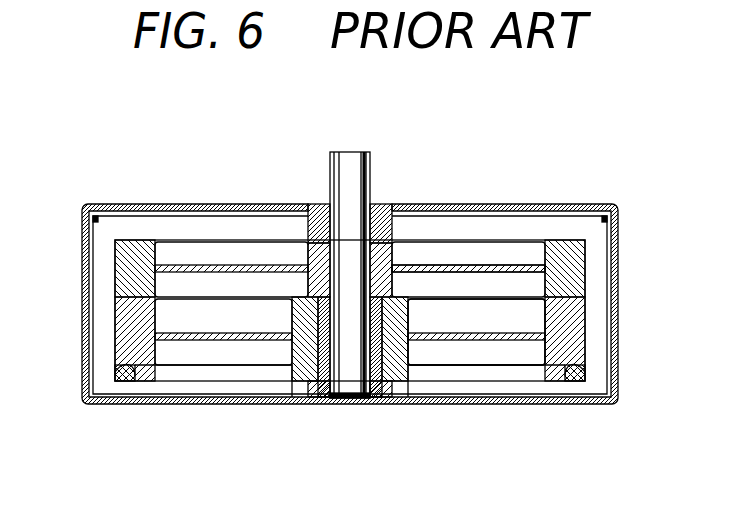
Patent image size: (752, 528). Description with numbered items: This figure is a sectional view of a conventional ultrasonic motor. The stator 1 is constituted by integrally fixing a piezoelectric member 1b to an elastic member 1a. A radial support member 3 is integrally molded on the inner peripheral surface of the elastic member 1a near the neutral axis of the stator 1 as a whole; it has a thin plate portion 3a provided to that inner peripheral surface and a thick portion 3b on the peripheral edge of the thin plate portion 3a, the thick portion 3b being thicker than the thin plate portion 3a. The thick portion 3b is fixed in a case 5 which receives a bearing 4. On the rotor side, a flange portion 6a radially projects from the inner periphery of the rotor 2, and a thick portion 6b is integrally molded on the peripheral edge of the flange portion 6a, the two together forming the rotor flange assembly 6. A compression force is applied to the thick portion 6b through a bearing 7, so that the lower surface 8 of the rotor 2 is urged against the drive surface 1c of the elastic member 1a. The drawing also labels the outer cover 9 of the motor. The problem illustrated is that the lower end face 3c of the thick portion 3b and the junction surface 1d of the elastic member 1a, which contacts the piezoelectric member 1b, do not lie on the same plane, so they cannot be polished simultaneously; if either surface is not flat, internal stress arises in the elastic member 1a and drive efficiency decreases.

The stator 1 is at (368, 311).
The elastic member 1a is at (570, 325).
The piezoelectric member 1b is at (609, 362).
The drive surface 1c is at (115, 312).
The junction surface 1d is at (125, 360).
The rotor 2 is at (575, 268).
The radial support member 3 is at (407, 396).
The thin plate portion 3a is at (450, 347).
The thick portion 3b is at (388, 386).
The lower end face 3c is at (312, 386).
The bearing 4 is at (328, 398).
The case 5 is at (117, 404).
The flange and thick portion of rotor 6 is at (426, 198).
The flange portion 6a is at (470, 267).
The thick portion 6b is at (400, 243).
The bearing 7 is at (322, 205).
The lower surface 8 is at (118, 278).
The cover 9 is at (132, 205).